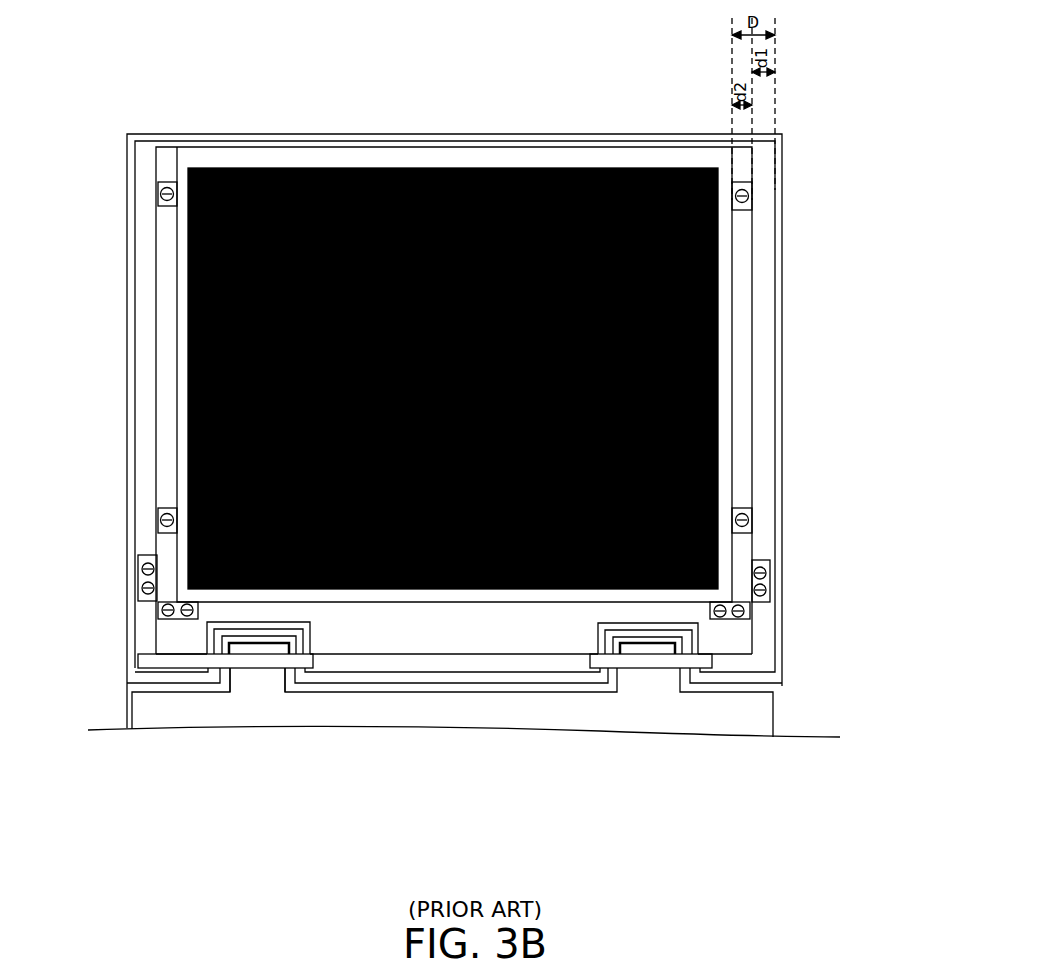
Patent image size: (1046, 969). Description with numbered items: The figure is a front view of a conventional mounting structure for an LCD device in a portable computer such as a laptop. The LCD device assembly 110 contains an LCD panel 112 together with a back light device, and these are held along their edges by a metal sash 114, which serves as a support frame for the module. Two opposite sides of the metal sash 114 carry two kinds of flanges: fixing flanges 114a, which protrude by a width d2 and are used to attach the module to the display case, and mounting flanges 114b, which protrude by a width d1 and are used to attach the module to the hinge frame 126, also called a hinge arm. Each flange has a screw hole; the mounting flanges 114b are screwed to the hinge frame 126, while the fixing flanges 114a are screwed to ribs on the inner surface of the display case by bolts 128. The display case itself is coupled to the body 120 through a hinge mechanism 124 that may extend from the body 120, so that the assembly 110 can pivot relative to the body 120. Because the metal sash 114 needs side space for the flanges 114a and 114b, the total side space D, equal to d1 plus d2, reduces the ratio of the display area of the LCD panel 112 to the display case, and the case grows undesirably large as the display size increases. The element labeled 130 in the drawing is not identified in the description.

The LCD device assembly 110 is at (758, 284).
The LCD panel 112 is at (530, 170).
The metal sash 114 is at (626, 162).
The fixing flange 114a is at (753, 514).
The mounting flange 114b is at (742, 621).
The body 120 is at (777, 712).
The hinge mechanism 124 is at (250, 683).
The hinge frame 126 is at (148, 635).
The bolt 128 is at (748, 193).
The top chassis 130 is at (783, 387).